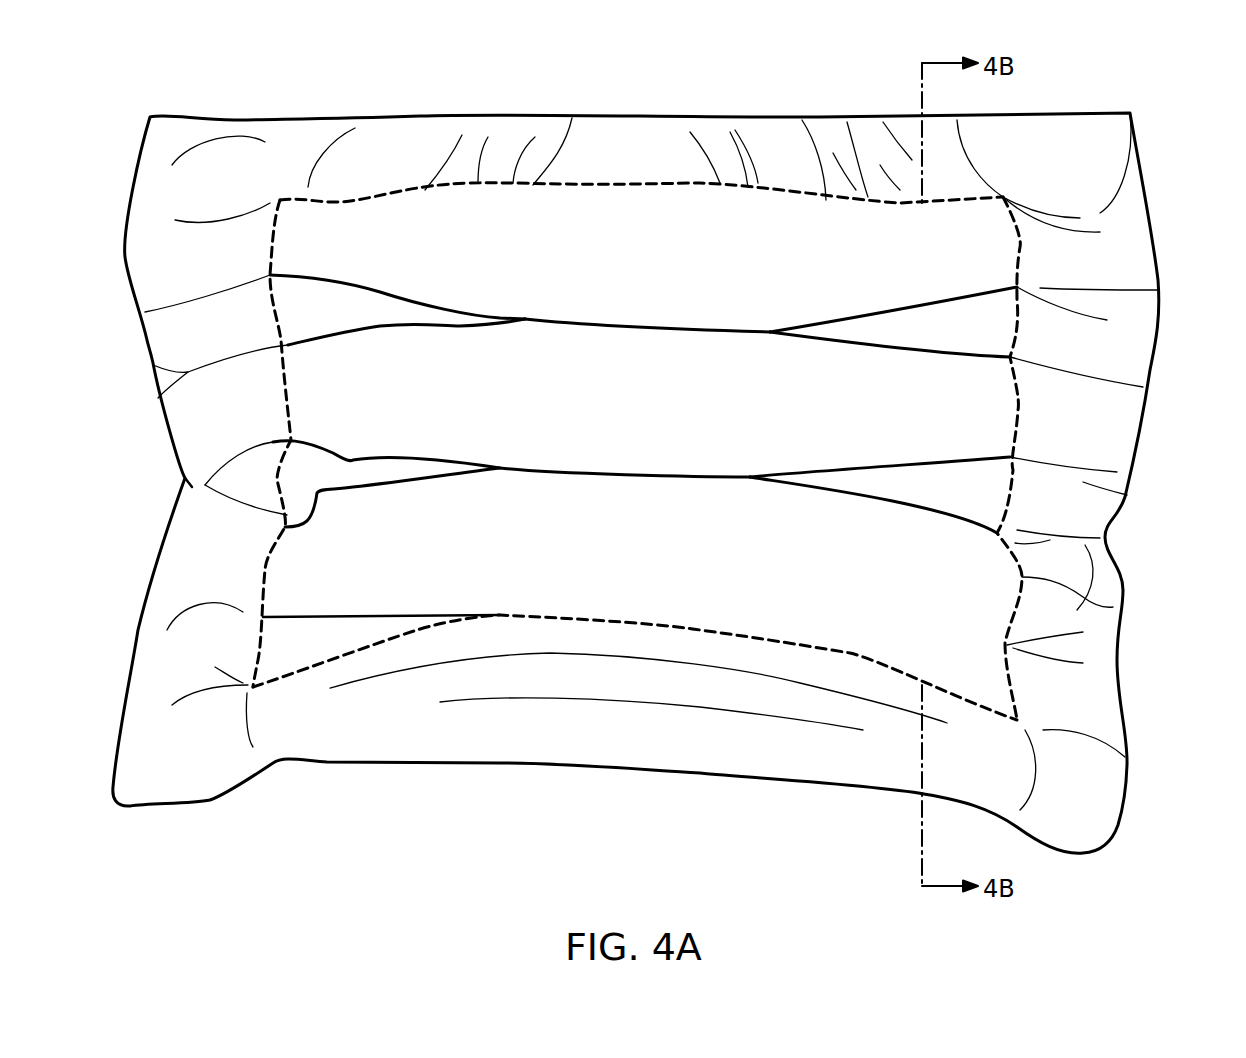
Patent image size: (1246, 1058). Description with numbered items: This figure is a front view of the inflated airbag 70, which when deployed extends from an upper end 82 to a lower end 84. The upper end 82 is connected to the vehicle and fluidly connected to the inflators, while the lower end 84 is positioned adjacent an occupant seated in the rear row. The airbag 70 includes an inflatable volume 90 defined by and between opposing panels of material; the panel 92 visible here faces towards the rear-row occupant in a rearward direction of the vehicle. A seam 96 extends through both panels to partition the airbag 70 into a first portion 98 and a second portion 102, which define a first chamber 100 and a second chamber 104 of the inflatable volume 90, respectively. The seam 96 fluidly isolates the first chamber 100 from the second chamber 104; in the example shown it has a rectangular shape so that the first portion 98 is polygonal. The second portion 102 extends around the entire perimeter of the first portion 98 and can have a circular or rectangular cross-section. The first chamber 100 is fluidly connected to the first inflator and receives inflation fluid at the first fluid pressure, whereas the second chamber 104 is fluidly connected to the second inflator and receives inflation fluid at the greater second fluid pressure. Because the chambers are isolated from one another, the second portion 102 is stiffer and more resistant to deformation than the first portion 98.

The airbag 70 is at (1127, 75).
The upper end 82 is at (1172, 139).
The lower end 84 is at (1136, 836).
The inflatable volume 90 is at (828, 222).
The panel 92 is at (686, 422).
The seam 96 is at (1113, 607).
The first portion 98 is at (452, 222).
The first chamber 100 is at (580, 222).
The second portion 102 is at (1128, 343).
The second chamber 104 is at (1108, 443).